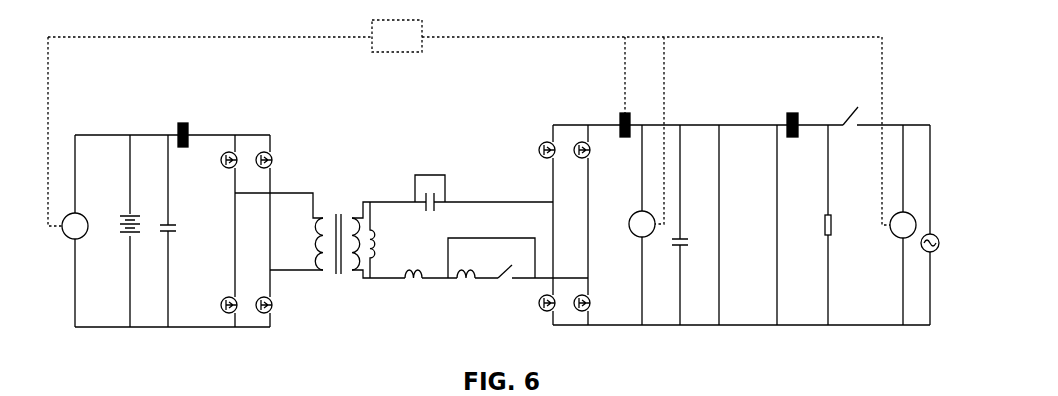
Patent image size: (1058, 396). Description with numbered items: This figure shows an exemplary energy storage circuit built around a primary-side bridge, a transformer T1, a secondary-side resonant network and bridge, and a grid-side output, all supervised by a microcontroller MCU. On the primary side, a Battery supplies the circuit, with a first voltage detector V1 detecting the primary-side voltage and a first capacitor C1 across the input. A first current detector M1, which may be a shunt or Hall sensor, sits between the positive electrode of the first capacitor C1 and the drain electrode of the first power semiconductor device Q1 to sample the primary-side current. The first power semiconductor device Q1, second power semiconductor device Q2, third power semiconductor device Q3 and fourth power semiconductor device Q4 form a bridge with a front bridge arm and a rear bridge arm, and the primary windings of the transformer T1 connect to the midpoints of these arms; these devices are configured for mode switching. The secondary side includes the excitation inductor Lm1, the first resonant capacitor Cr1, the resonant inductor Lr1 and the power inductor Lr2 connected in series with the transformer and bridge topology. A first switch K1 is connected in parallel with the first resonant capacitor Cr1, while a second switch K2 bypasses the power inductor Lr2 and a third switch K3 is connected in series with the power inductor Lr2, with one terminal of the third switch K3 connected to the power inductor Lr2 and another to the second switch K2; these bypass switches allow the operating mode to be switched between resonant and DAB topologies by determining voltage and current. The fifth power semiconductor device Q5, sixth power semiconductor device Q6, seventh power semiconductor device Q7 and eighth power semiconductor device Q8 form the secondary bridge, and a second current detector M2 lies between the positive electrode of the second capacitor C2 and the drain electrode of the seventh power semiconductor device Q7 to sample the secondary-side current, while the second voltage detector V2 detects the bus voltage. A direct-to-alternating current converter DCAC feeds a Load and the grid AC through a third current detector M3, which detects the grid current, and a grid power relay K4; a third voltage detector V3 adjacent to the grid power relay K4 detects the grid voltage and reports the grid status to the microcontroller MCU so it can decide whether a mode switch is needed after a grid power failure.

The microcontroller MCU is at (469, 123).
The first voltage detector V1 is at (66, 239).
The battery Battery is at (109, 241).
The first capacitor C1 is at (180, 229).
The first current detector M1 is at (185, 108).
The first power semiconductor device Q1 is at (220, 161).
The second power semiconductor device Q2 is at (220, 306).
The third power semiconductor device Q3 is at (277, 161).
The fourth power semiconductor device Q4 is at (277, 306).
The transformer T1 is at (337, 232).
The excitation inductor Lm1 is at (394, 240).
The first resonant capacitor Cr1 is at (427, 211).
The first switch K1 is at (424, 175).
The resonant inductor Lr1 is at (411, 285).
The power inductor Lr2 is at (466, 285).
The second switch K2 is at (460, 238).
The third switch K3 is at (506, 270).
The fifth power semiconductor device Q5 is at (536, 151).
The sixth power semiconductor device Q6 is at (536, 307).
The seventh power semiconductor device Q7 is at (596, 158).
The eighth power semiconductor device Q8 is at (596, 304).
The second current detector M2 is at (569, 103).
The second voltage detector V2 is at (630, 224).
The second capacitor C2 is at (692, 243).
The DC/AC converter DCAC is at (748, 222).
The load Load is at (806, 225).
The third current detector M3 is at (791, 97).
The grid power relay K4 is at (857, 103).
The third voltage detector V3 is at (895, 234).
The AC grid source AC is at (941, 234).